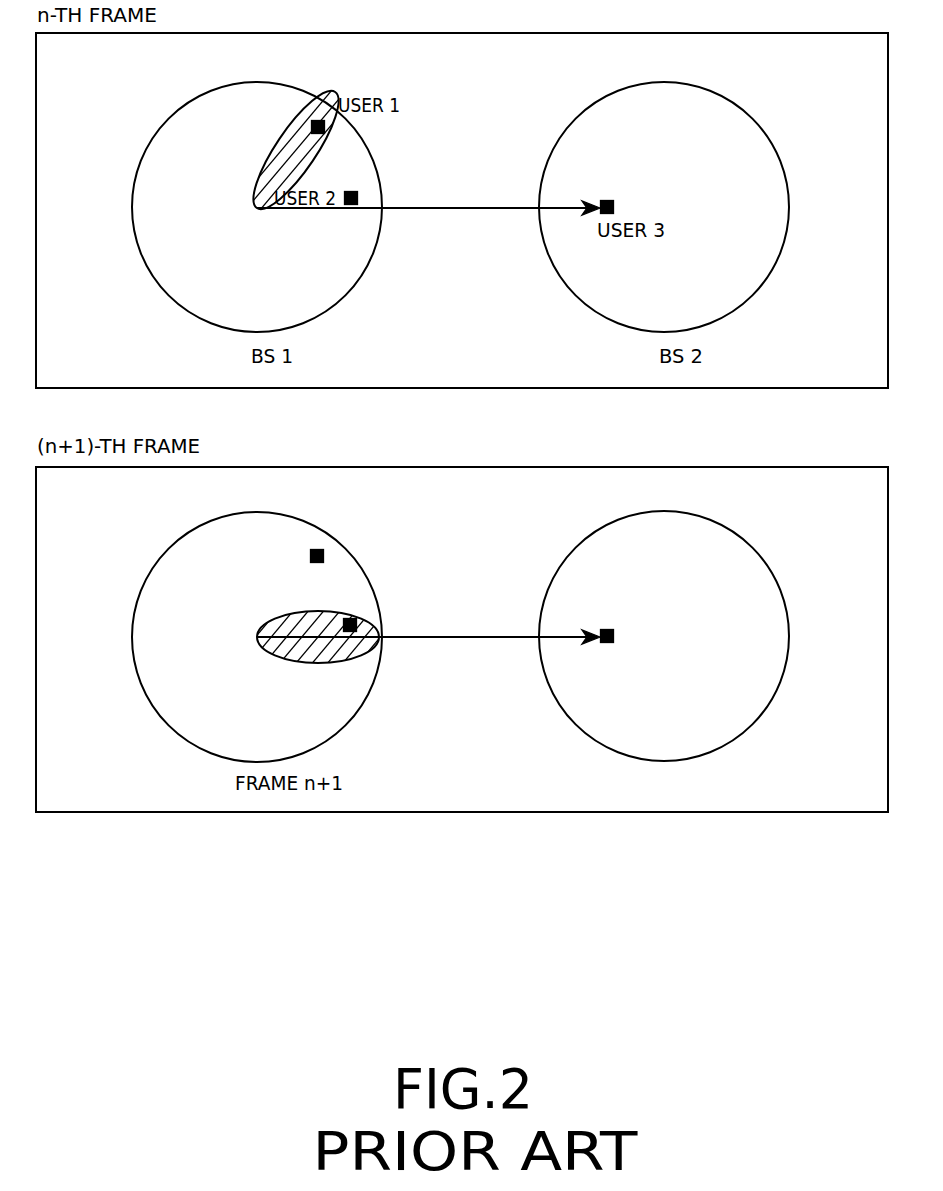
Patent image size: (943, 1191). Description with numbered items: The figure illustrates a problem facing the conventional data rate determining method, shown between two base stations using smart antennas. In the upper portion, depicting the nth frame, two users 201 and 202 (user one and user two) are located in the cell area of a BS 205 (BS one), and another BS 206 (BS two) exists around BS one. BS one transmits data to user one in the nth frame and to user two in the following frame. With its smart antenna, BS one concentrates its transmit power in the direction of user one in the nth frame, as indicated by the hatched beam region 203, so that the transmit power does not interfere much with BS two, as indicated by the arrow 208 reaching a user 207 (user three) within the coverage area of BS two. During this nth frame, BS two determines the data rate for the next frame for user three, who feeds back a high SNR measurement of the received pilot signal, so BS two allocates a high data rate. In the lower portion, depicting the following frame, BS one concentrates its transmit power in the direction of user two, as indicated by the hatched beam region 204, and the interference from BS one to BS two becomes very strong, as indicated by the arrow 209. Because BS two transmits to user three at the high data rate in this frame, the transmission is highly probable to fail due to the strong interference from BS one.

The user 1 201 is at (322, 95).
The user 2 202 is at (352, 190).
The transmit power concentration toward user 1 203 is at (278, 138).
The transmit power concentration toward user 2 204 is at (319, 611).
The BS 1 205 is at (132, 210).
The BS 2 206 is at (792, 207).
The user 3 207 is at (608, 199).
The weak interference in the nth frame 208 is at (427, 205).
The strong interference in the (n+1)th frame 209 is at (427, 632).